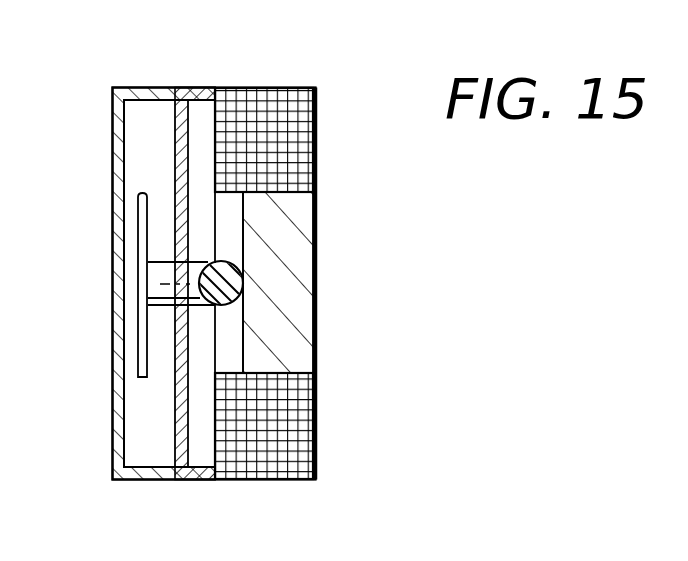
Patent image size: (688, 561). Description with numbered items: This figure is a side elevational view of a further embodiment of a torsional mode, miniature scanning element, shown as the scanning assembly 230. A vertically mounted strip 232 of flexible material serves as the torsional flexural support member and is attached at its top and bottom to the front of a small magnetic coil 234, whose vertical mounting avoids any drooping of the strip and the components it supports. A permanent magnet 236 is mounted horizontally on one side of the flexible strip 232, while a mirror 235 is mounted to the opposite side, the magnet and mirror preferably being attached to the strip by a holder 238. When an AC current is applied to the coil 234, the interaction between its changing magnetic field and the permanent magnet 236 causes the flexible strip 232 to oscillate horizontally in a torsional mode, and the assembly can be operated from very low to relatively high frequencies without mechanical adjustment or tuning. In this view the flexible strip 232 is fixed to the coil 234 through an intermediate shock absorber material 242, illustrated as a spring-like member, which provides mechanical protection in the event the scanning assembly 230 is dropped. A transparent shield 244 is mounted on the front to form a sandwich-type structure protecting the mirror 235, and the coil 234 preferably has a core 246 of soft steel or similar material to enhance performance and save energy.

The scanning assembly 230 is at (157, 65).
The flexible strip 232 is at (175, 425).
The magnetic coil 234 is at (315, 137).
The mirror 235 is at (140, 355).
The permanent magnet 236 is at (243, 297).
The holder 238 is at (200, 262).
The shock absorber material 242 is at (200, 90).
The transparent shield 244 is at (112, 158).
The core 246 is at (310, 345).